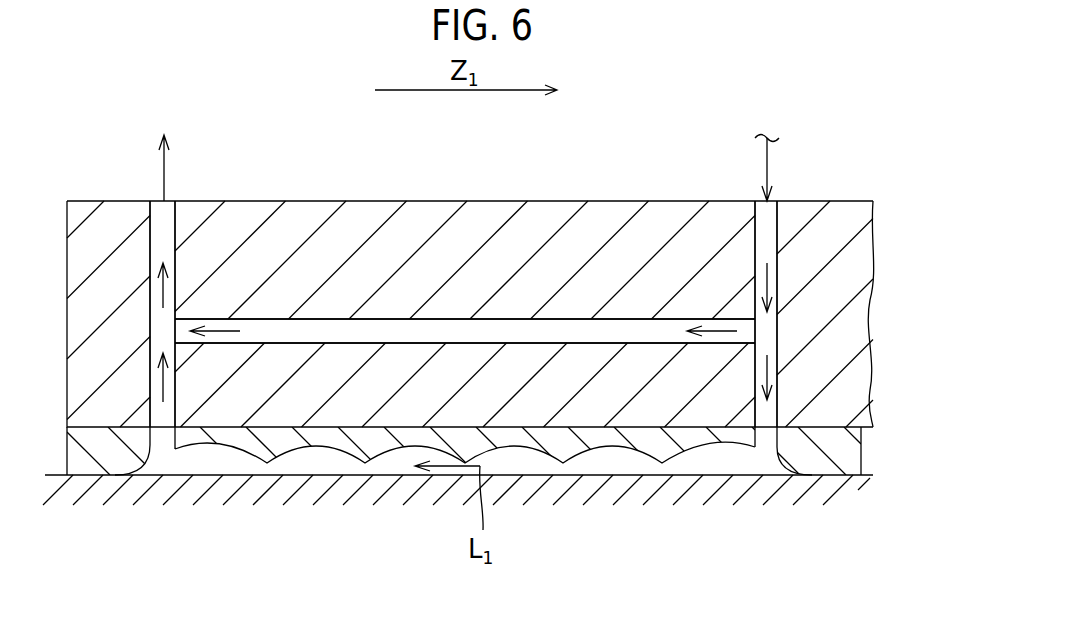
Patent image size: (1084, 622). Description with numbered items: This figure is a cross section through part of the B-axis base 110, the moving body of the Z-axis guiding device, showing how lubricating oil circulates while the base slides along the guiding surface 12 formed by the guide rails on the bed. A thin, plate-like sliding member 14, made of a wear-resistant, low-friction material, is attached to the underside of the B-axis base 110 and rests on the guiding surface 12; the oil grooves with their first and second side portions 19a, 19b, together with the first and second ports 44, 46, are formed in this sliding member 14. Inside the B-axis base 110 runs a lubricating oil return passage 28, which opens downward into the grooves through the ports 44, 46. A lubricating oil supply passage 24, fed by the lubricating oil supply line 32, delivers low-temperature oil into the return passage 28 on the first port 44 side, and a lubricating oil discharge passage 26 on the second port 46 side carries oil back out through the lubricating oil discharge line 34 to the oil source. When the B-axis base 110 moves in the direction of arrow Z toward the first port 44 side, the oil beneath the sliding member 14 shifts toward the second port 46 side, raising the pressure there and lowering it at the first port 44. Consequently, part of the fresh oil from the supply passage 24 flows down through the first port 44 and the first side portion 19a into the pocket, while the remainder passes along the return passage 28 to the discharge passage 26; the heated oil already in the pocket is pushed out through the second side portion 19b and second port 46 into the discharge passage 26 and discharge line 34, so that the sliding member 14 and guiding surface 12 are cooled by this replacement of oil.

The B-axis base 110 is at (587, 232).
The lubricating oil discharge passage 26 is at (155, 258).
The lubricating oil discharge line 34 is at (165, 180).
The lubricating oil return passage 28 is at (403, 320).
The lubricating oil supply line 32 is at (768, 158).
The lubricating oil supply passage 24 is at (767, 243).
The sliding member 14 is at (85, 465).
The second port 46 is at (162, 435).
The second side portion 19b is at (128, 467).
The first port 44 is at (763, 440).
The first side portion 19a is at (805, 462).
The guiding surface 12 is at (872, 475).